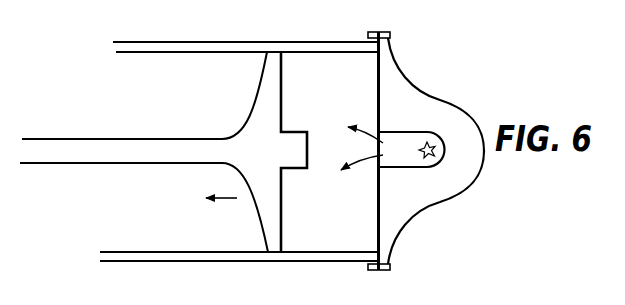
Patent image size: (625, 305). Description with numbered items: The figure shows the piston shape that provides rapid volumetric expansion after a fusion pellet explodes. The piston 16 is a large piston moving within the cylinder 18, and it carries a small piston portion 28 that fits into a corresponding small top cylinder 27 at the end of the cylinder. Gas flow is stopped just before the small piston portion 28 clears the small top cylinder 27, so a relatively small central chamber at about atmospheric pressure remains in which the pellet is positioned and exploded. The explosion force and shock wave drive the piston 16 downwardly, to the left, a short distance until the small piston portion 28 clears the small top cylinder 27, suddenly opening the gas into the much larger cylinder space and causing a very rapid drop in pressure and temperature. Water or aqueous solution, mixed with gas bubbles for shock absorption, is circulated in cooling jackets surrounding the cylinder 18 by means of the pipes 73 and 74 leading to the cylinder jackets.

The piston 16 is at (258, 206).
The cylinder 18 is at (177, 240).
The small top cylinder 27 is at (406, 160).
The small piston portion 28 is at (308, 163).
The pipe 73 is at (453, 203).
The pipe 74 is at (422, 85).